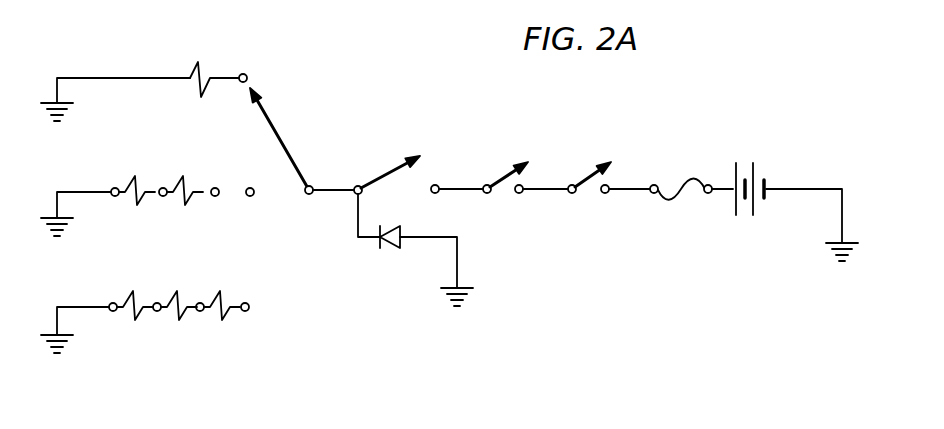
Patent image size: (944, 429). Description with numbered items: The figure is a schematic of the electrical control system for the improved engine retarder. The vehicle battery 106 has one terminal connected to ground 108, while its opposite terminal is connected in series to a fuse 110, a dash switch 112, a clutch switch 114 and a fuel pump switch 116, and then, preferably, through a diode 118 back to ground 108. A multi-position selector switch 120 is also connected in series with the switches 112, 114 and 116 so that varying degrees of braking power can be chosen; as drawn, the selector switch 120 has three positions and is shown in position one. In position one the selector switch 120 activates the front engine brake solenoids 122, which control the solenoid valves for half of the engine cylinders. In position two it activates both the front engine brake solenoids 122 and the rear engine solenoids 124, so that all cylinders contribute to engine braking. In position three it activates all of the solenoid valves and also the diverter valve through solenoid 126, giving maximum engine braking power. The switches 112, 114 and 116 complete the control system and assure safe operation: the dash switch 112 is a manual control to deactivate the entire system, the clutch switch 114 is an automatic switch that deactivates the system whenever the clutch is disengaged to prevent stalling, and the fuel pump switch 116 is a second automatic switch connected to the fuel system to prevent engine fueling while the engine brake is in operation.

The vehicle battery 106 is at (742, 168).
The ground 108 is at (66, 105).
The fuse 110 is at (680, 187).
The dash switch 112 is at (587, 181).
The clutch switch 114 is at (502, 180).
The fuel pump switch 116 is at (384, 177).
The diode 118 is at (396, 246).
The multi-position selector switch 120 is at (283, 140).
The front engine brake solenoids 122 is at (211, 47).
The rear engine solenoids 124 is at (135, 176).
The solenoid 126 is at (133, 291).